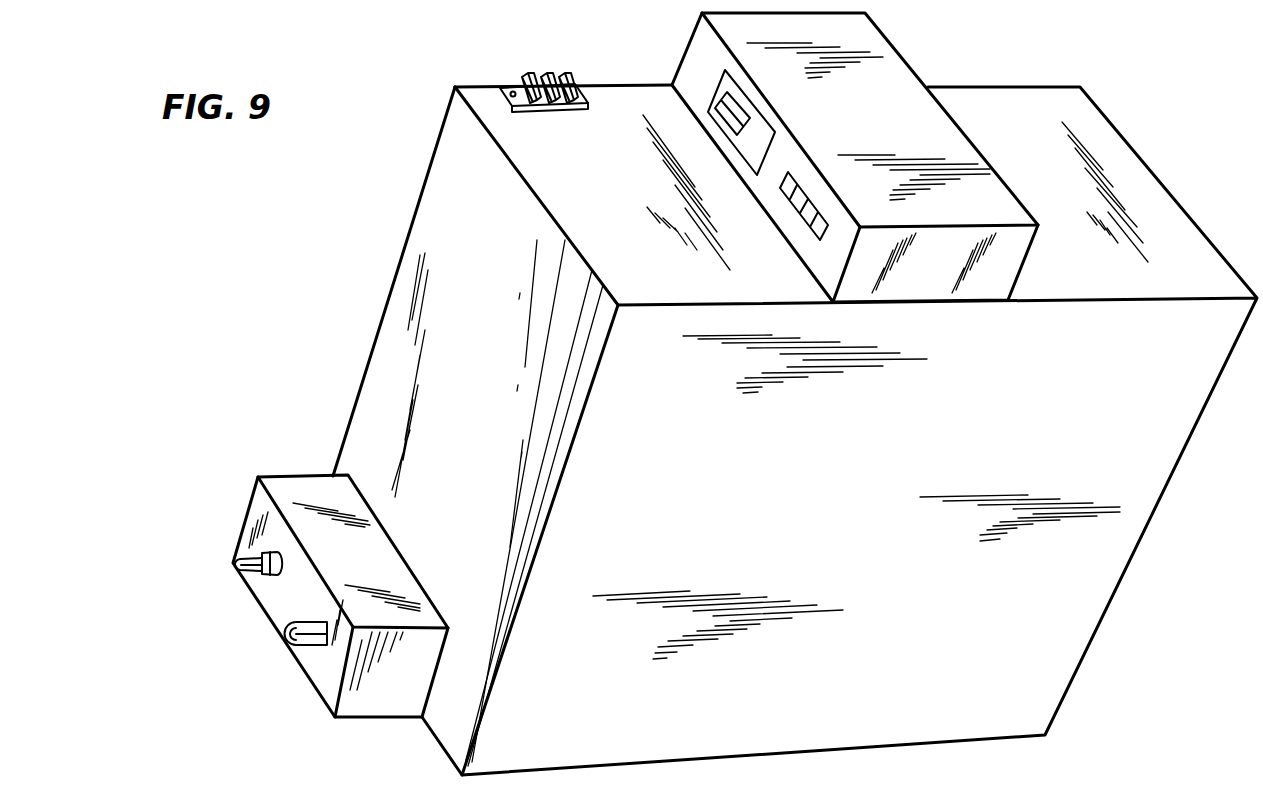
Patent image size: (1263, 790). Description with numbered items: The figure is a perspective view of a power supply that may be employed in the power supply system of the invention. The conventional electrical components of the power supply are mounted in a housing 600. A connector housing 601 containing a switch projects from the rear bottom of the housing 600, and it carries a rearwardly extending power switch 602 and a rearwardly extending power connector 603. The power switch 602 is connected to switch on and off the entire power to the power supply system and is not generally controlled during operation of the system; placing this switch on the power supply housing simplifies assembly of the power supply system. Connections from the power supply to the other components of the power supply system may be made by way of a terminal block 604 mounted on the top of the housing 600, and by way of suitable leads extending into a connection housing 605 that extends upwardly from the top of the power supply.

The housing 600 is at (377, 373).
The connector housing 601 is at (307, 485).
The power switch 602 is at (250, 570).
The power connector 603 is at (282, 630).
The terminal block 604 is at (512, 84).
The connection housing 605 is at (733, 32).